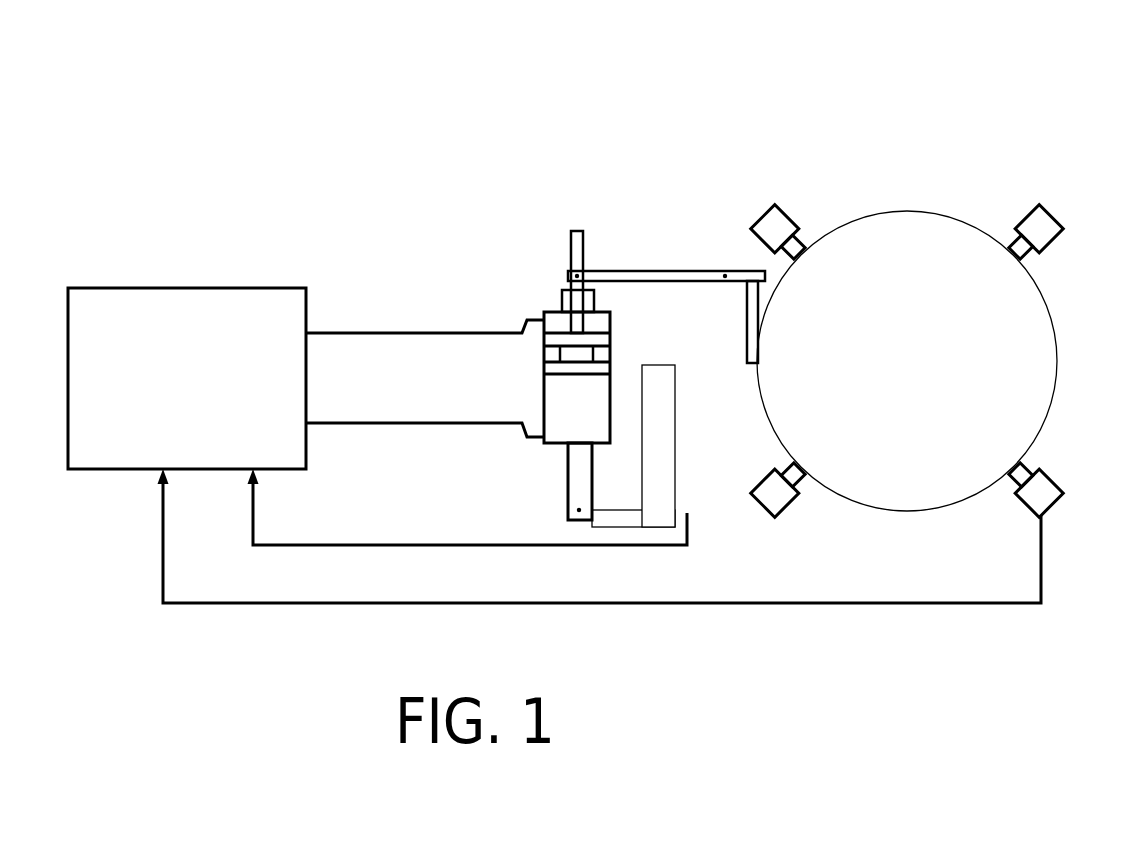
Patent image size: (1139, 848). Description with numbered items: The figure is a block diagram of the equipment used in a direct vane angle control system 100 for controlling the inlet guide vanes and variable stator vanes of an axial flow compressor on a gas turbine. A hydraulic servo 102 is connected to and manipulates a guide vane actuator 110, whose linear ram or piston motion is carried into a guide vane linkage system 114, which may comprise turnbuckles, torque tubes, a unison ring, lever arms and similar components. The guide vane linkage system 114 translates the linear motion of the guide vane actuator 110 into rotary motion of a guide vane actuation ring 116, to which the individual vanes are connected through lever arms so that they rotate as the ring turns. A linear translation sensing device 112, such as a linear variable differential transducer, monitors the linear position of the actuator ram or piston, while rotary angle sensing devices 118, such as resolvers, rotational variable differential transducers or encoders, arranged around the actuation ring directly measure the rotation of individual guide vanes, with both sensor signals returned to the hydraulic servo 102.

The hydraulic test system 100 is at (426, 106).
The hydraulic servo 102 is at (290, 324).
The guide vane actuator 110 is at (578, 257).
The linear translation sensing device 112 is at (660, 493).
The guide vane linkage system 114 is at (630, 270).
The guide vane actuation ring 116 is at (968, 222).
The rotary angle sensing devices 118 is at (1043, 208).